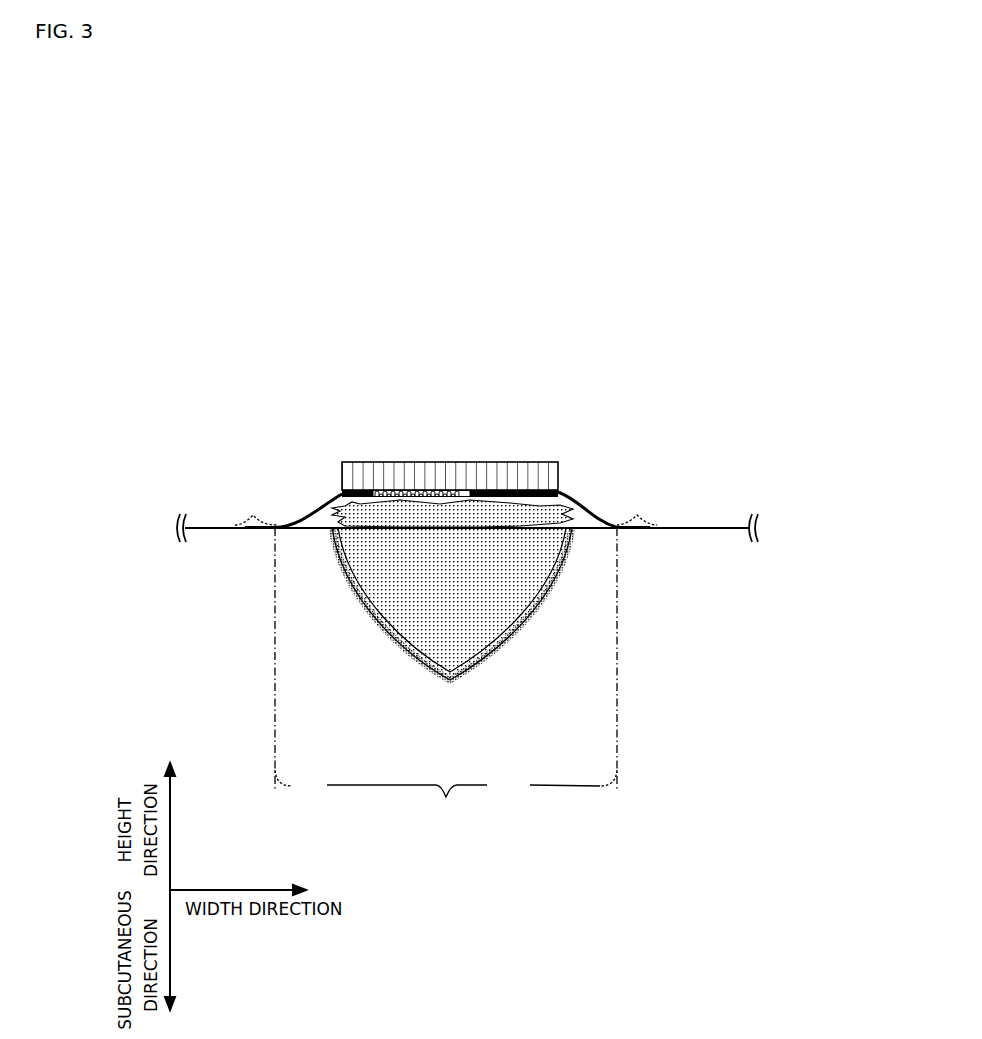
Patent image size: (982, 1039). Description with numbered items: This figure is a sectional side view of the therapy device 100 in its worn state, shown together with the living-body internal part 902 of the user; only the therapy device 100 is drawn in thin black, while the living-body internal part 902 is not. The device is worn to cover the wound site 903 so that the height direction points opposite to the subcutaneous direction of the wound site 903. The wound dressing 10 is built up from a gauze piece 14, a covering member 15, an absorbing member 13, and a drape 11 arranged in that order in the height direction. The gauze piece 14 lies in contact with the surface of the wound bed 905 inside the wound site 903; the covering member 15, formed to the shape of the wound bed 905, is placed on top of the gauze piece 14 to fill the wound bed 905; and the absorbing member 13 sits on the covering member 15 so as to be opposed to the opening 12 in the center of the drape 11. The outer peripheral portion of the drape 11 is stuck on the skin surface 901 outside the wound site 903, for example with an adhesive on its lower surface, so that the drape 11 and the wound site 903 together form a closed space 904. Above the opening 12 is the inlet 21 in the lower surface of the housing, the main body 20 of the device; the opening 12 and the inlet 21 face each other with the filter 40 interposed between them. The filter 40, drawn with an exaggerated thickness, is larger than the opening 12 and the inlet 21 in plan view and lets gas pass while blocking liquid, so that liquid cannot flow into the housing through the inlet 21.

The therapy device 100 is at (697, 295).
The wound dressing 10 is at (648, 424).
The drape 11 is at (597, 513).
The opening 12 is at (445, 502).
The absorbing member 13 is at (535, 513).
The gauze piece 14 is at (395, 640).
The covering member 15 is at (382, 587).
The sensor device body 20 is at (526, 462).
The inlet 21 is at (422, 482).
The filter 40 is at (460, 492).
The skin surface 901 is at (446, 506).
The living-body internal part 902 is at (690, 588).
The wound site 903 is at (446, 675).
The closed space 904 is at (330, 498).
The wound bed 905 is at (450, 683).